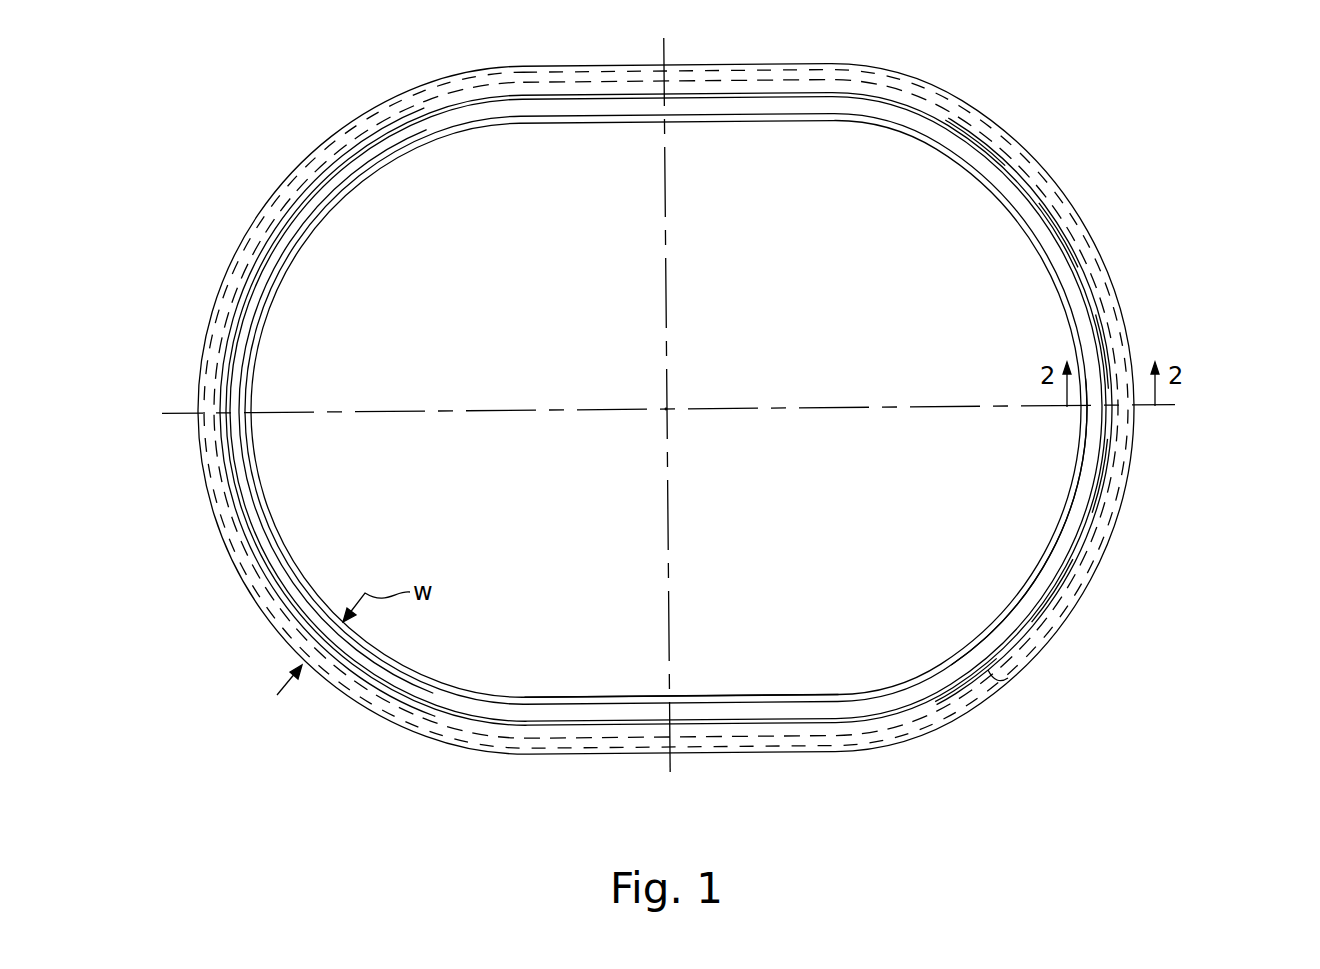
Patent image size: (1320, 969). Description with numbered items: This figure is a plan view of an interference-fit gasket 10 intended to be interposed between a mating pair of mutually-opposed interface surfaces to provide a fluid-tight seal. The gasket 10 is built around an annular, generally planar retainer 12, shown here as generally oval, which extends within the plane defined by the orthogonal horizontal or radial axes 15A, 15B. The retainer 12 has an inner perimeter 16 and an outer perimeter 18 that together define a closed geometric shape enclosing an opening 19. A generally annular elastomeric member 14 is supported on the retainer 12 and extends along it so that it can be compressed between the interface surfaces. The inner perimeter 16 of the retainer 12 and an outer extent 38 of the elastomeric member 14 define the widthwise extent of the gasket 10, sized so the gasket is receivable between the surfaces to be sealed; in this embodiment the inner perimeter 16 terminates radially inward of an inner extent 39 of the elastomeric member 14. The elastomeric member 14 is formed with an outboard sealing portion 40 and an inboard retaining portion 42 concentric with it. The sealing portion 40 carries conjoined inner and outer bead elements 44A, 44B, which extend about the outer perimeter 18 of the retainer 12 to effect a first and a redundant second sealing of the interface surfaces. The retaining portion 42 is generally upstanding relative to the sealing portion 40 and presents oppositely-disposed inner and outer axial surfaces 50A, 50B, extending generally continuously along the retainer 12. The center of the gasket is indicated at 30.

The interference-fit gasket 10 is at (1210, 113).
The retainer 12 is at (930, 668).
The elastomeric member 14 is at (833, 697).
The radial axis 15A is at (666, 45).
The radial axis 15B is at (170, 413).
The inner perimeter 16 is at (402, 669).
The outer perimeter 18 is at (408, 718).
The opening 19 is at (770, 299).
The center 30 is at (666, 409).
The outer extent 38 is at (482, 746).
The inner extent 39 is at (494, 697).
The sealing portion 40 is at (1128, 482).
The retaining portion 42 is at (1063, 508).
The inner bead element 44A is at (1072, 613).
The outer bead element 44B is at (1102, 555).
The inner axial surface 50A is at (1010, 608).
The outer axial surface 50B is at (1000, 688).